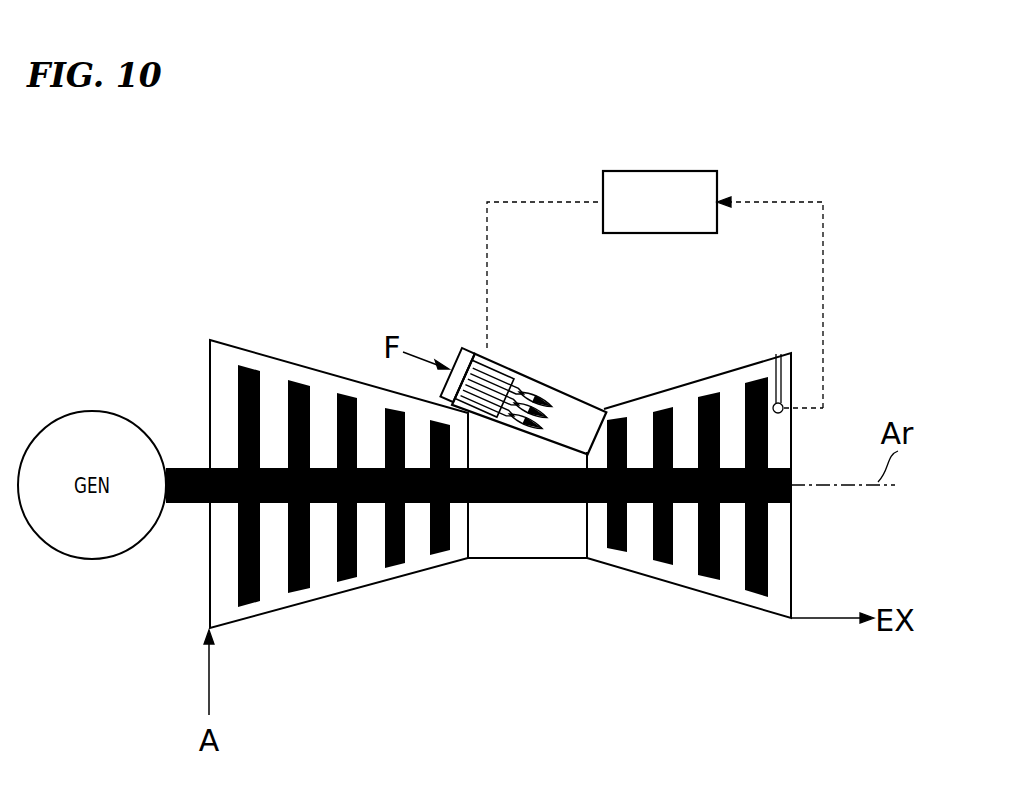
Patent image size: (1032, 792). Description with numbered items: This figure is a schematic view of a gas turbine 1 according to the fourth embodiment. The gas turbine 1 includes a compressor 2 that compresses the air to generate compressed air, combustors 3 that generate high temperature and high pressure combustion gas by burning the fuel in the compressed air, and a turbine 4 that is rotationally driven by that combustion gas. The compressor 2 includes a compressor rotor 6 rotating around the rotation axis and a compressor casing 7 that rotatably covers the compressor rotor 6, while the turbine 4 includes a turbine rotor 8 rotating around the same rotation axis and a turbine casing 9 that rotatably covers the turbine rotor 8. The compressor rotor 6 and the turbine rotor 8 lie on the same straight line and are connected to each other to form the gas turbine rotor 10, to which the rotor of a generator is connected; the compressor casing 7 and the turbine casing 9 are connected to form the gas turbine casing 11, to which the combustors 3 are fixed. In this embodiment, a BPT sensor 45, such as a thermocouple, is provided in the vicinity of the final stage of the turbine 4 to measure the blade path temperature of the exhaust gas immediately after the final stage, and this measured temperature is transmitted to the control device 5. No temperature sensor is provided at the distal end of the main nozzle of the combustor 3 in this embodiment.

The gas turbine 1 is at (857, 165).
The compressor 2 is at (339, 529).
The combustor 3 is at (522, 375).
The turbine 4 is at (689, 535).
The control device 5 is at (661, 171).
The compressor rotor 6 is at (417, 503).
The compressor casing 7 is at (372, 589).
The turbine rotor 8 is at (641, 503).
The turbine casing 9 is at (683, 589).
The gas turbine rotor 10 is at (503, 503).
The gas turbine casing 11 is at (548, 560).
The BPT (Blade Path Temperature) sensor 45 is at (781, 413).